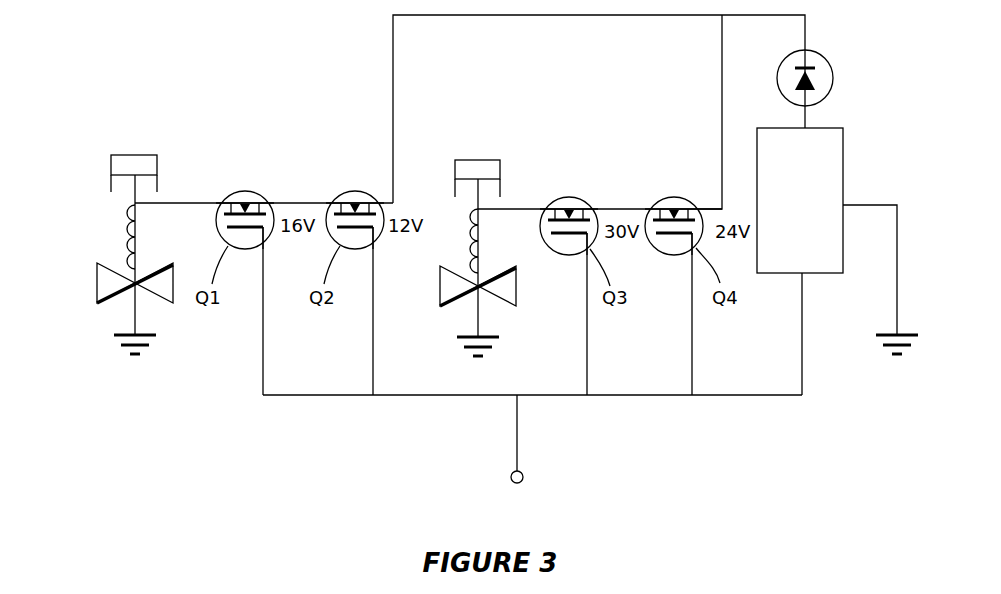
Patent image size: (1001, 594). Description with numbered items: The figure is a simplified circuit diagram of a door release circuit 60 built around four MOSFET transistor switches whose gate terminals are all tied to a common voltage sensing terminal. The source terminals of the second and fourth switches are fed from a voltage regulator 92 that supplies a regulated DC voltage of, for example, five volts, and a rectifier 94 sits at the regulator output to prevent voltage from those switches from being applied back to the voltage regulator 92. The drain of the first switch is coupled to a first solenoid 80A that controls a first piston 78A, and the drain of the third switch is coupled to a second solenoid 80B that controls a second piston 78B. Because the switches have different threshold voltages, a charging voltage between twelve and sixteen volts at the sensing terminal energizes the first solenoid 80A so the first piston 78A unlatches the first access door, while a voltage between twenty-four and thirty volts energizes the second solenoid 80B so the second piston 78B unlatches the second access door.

The door release circuit 60 is at (296, 150).
The first piston 78A is at (110, 164).
The first solenoid 80A is at (118, 242).
The second piston 78B is at (501, 164).
The second solenoid 80B is at (463, 256).
The voltage regulator 92 is at (844, 172).
The rectifier 94 is at (834, 78).